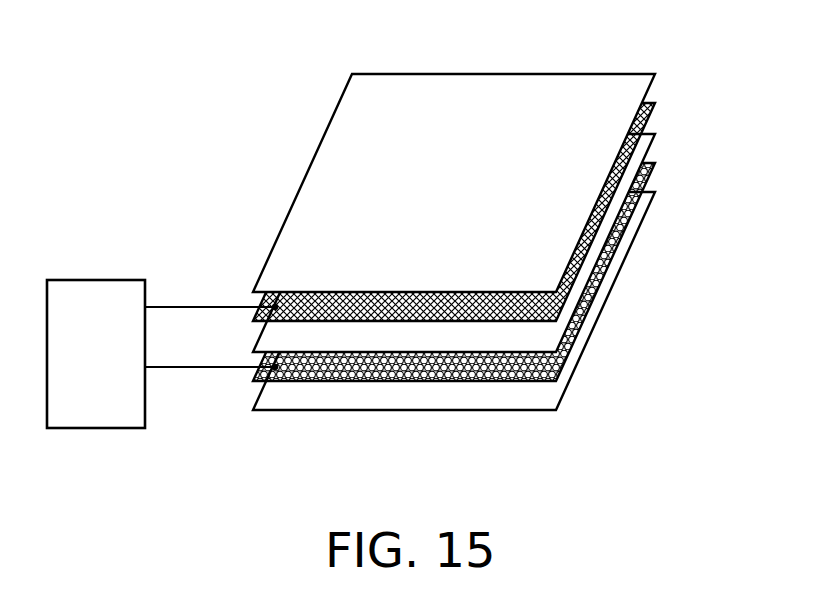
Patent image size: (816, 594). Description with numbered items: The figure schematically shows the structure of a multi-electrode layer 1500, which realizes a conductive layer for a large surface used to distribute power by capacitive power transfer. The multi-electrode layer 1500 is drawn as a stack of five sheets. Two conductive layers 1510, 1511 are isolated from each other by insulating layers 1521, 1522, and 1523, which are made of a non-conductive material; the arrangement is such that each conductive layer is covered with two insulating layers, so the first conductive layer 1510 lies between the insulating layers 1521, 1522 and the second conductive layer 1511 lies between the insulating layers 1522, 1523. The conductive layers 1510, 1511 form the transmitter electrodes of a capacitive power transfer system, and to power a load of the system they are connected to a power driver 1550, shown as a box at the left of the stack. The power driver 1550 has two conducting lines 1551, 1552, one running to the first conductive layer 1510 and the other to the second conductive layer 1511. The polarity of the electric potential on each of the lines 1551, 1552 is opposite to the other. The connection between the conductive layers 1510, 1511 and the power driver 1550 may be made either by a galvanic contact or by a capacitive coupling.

The multi-electrode layer 1500 is at (275, 83).
The insulating layer 1521 is at (656, 84).
The conductive layer 1510 is at (658, 112).
The insulating layer 1522 is at (657, 142).
The conductive layer 1511 is at (658, 172).
The insulating layer 1523 is at (657, 202).
The power driver 1550 is at (93, 279).
The conducting line 1551 is at (186, 307).
The conducting line 1552 is at (188, 367).